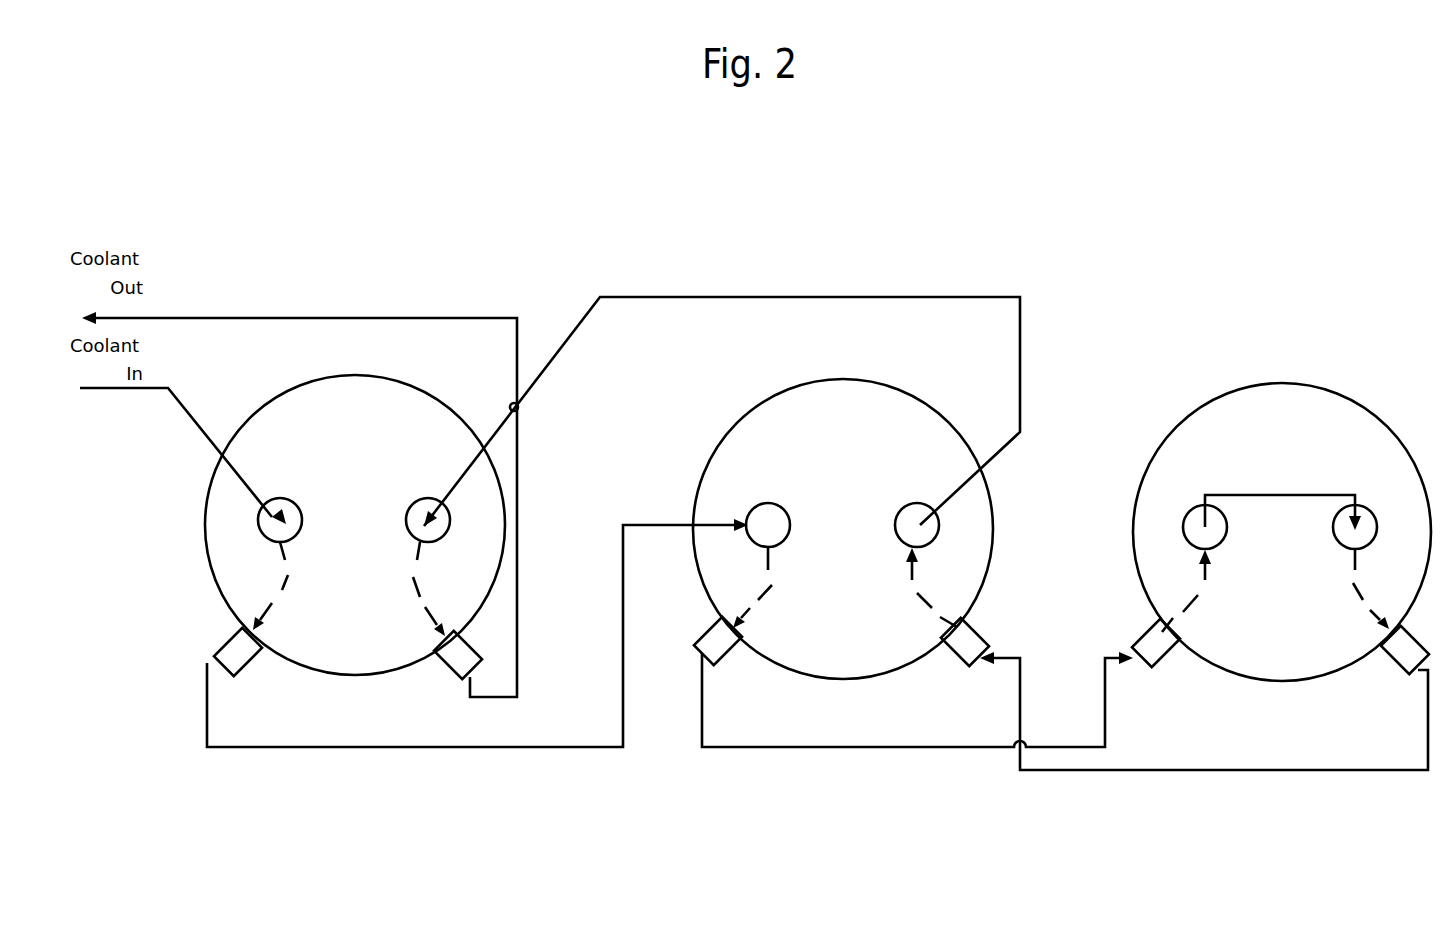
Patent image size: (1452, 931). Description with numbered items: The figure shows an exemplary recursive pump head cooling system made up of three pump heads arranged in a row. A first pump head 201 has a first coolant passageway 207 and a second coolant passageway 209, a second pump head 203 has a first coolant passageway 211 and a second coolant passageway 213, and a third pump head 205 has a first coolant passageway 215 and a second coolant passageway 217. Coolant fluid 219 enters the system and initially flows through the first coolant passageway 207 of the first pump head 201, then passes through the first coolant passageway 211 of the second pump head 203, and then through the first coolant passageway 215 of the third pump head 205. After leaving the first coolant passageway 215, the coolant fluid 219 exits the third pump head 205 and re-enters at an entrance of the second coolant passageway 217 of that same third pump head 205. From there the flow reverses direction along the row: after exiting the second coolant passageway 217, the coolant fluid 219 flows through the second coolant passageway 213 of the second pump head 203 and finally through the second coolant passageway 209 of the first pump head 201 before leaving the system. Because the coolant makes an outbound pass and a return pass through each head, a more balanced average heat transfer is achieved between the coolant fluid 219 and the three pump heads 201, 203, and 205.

The first pump head 201 is at (331, 466).
The second pump head 203 is at (823, 481).
The third pump head 205 is at (1268, 472).
The first coolant passageway 207 is at (290, 578).
The second coolant passageway 209 is at (413, 583).
The first coolant passageway 211 is at (772, 583).
The second coolant passageway 213 is at (917, 590).
The first coolant passageway 215 is at (1197, 595).
The second coolant passageway 217 is at (1357, 593).
The coolant fluid 219 is at (175, 420).